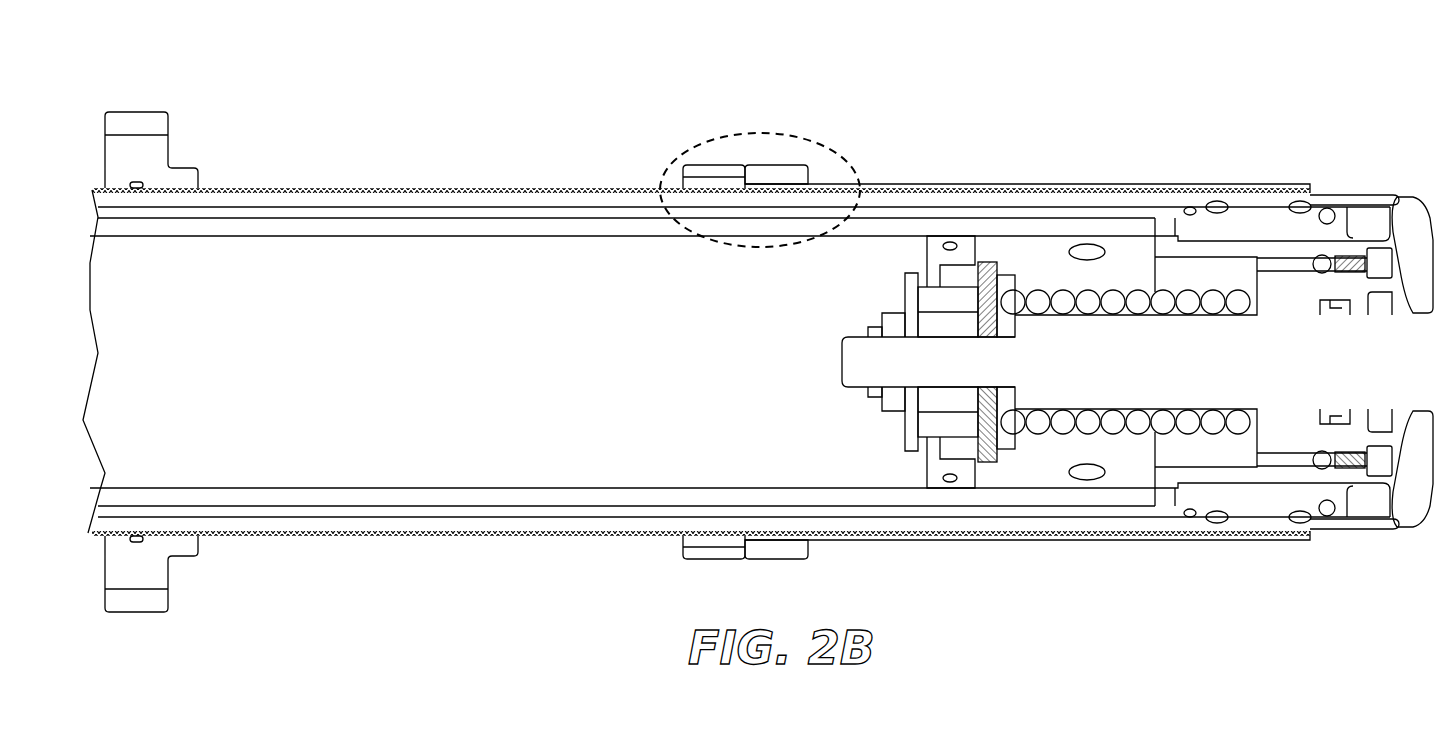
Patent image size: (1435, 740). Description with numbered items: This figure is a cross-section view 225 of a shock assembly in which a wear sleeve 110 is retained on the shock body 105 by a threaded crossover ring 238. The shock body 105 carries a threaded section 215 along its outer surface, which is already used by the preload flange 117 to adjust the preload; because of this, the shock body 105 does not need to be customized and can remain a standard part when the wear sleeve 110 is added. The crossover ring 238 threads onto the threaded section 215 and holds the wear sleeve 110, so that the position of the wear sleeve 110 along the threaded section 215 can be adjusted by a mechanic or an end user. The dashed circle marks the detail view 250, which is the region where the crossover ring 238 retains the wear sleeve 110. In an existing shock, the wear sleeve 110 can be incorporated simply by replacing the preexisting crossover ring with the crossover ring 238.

The shock body 105 is at (1340, 194).
The wear sleeve 110 is at (1178, 184).
The preload flange 117 is at (138, 110).
The threaded section 215 is at (387, 186).
The cross-section view 225 is at (1230, 64).
The crossover ring 238 is at (768, 560).
The detail view 250 is at (800, 137).